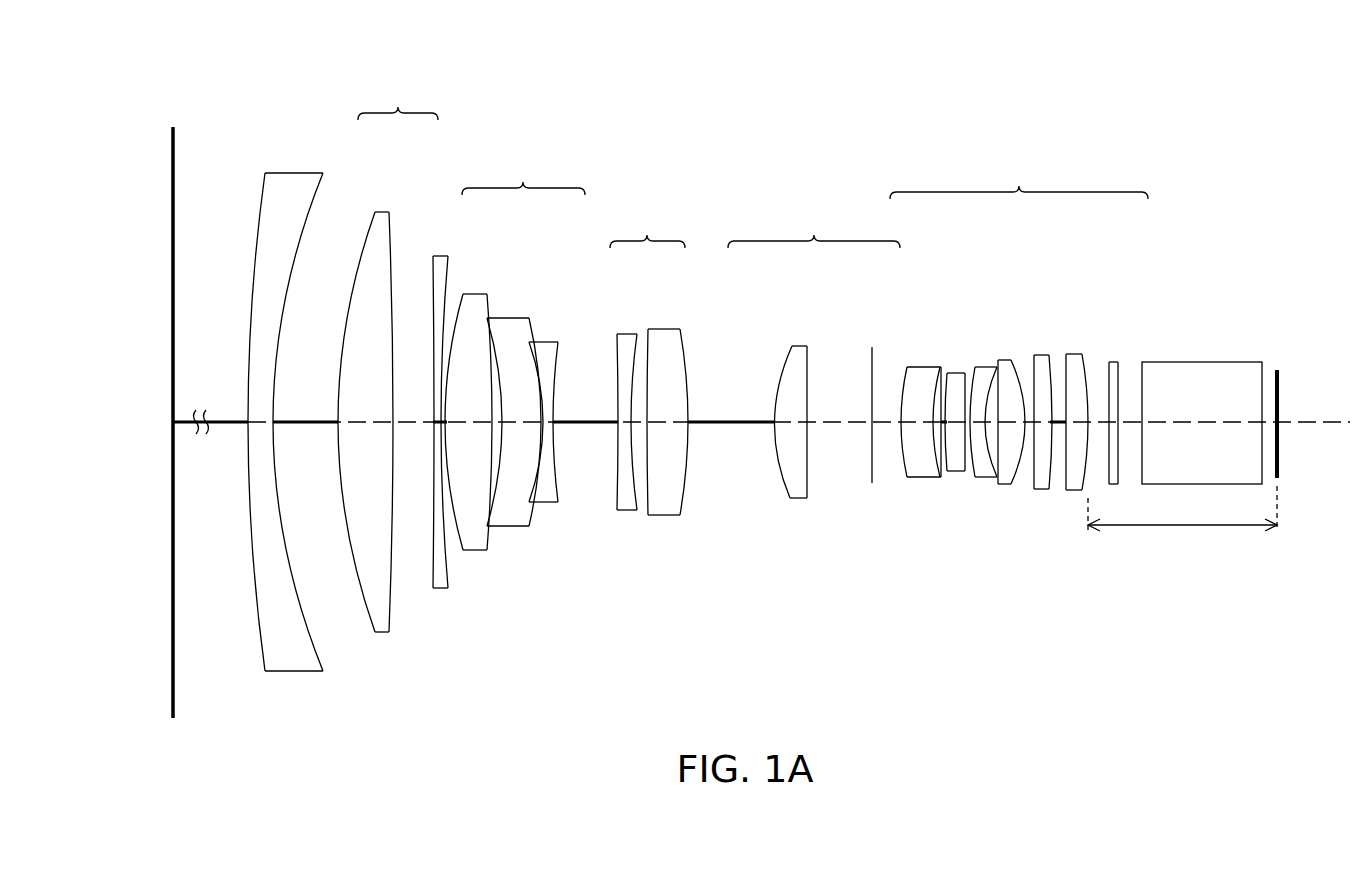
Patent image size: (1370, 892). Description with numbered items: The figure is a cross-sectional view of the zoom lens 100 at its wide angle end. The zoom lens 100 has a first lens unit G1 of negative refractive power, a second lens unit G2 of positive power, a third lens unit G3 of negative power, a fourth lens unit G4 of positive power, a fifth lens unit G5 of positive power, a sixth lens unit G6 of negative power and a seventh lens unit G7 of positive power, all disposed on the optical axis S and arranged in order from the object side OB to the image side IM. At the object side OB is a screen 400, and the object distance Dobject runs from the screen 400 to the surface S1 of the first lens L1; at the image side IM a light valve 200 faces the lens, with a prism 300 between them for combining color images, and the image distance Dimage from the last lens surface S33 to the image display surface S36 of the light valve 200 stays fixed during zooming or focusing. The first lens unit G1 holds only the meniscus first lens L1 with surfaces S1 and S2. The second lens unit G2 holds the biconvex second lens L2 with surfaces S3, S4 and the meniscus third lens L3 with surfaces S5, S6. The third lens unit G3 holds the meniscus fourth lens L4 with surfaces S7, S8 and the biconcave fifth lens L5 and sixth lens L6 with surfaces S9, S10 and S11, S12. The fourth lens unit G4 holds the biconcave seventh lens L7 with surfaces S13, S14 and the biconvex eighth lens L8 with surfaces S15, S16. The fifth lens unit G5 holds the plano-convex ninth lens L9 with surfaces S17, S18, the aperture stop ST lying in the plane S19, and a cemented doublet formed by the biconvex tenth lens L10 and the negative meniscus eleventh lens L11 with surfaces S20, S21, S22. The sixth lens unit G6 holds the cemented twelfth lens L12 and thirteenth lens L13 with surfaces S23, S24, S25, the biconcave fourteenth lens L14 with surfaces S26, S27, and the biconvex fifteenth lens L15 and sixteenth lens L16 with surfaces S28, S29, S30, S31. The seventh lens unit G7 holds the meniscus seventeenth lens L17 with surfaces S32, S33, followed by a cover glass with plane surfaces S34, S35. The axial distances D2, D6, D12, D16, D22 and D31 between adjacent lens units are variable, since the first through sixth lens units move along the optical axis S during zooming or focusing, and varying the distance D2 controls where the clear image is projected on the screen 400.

The zoom lens 100 is at (780, 417).
The light valve 200 is at (1309, 428).
The prism 300 is at (1218, 380).
The screen 400 is at (172, 402).
The object side OB is at (187, 163).
The image side IM is at (1309, 473).
The optical axis S is at (1322, 424).
The aperture stop ST is at (821, 367).
The first lens unit G1 is at (284, 419).
The second lens unit G2 is at (401, 383).
The third lens unit G3 is at (531, 420).
The fourth lens unit G4 is at (638, 409).
The fifth lens unit G5 is at (833, 408).
The sixth lens unit G6 is at (984, 385).
The seventh lens unit G7 is at (1158, 326).
The first lens L1 is at (284, 439).
The second lens L2 is at (377, 378).
The third lens L3 is at (432, 405).
The fourth lens L4 is at (484, 376).
The fifth lens L5 is at (516, 443).
The sixth lens L6 is at (573, 443).
The seventh lens L7 is at (622, 381).
The eighth lens L8 is at (666, 432).
The ninth lens L9 is at (780, 375).
The tenth lens L10 is at (821, 367).
The eleventh lens L11 is at (850, 431).
The twelfth lens L12 is at (878, 386).
The thirteenth lens L13 is at (910, 406).
The fourteenth lens L14 is at (971, 406).
The fifteenth lens L15 is at (1056, 406).
The sixteenth lens L16 is at (1109, 406).
The seventeenth lens L17 is at (1158, 343).
The surface of first lens facing object side S1 is at (256, 604).
The surface of first lens facing image side S2 is at (300, 582).
The object-side surface of second lens S3 is at (367, 250).
The image-side surface of second lens S4 is at (391, 242).
The protruding surface of third lens S5 is at (433, 570).
The image-side surface of third lens S6 is at (445, 556).
The protruding surface of fourth lens S7 is at (459, 306).
The image-side surface of fourth lens S8 is at (490, 336).
The object-side surface of fifth lens S9 is at (490, 520).
The image-side surface of fifth lens S10 is at (527, 535).
The object-side surface of sixth lens S11 is at (548, 528).
The image-side surface of sixth lens S12 is at (561, 500).
The object-side surface of seventh lens S13 is at (615, 355).
The image-side surface of seventh lens S14 is at (632, 363).
The object-side surface of eighth lens S15 is at (652, 512).
The image-side surface of eighth lens S16 is at (689, 490).
The protruding surface of ninth lens S17 is at (782, 374).
The image-side surface of ninth lens S18 is at (805, 375).
The aperture stop plane S19 is at (870, 397).
The object-side surface of tenth lens S20 is at (903, 458).
The cemented surface of tenth and eleventh lenses S21 is at (930, 463).
The protruding surface of eleventh lens S22 is at (940, 466).
The object-side surface of twelfth lens S23 is at (951, 471).
The cemented surface of twelfth and thirteenth lenses S24 is at (968, 467).
The image-side surface of thirteenth lens S25 is at (976, 474).
The object-side surface of fourteenth lens S26 is at (986, 466).
The image-side surface of fourteenth lens S27 is at (993, 478).
The object-side surface of fifteenth lens S28 is at (998, 388).
The image-side surface of fifteenth lens S29 is at (1000, 466).
The object-side surface of sixteenth lens S30 is at (1024, 470).
The image-side surface of sixteenth lens S31 is at (1042, 474).
The protruding surface of seventeenth lens S32 is at (1068, 485).
The image-side surface of seventeenth lens S33 is at (1090, 372).
The object-side surface of cover glass S34 is at (1112, 372).
The image-side surface of cover glass S35 is at (1120, 368).
The image display surface S36 is at (1315, 473).
The distance between first and second lens units D2 is at (305, 426).
The distance between second and third lens units D6 is at (447, 475).
The distance between third and fourth lens units D12 is at (598, 435).
The distance between fourth and fifth lens units D16 is at (735, 435).
The distance between fifth and sixth lens units D22 is at (947, 373).
The distance between sixth and seventh lens units D31 is at (1060, 382).
The object distance Dobject is at (233, 425).
The image distance Dimage is at (1182, 526).